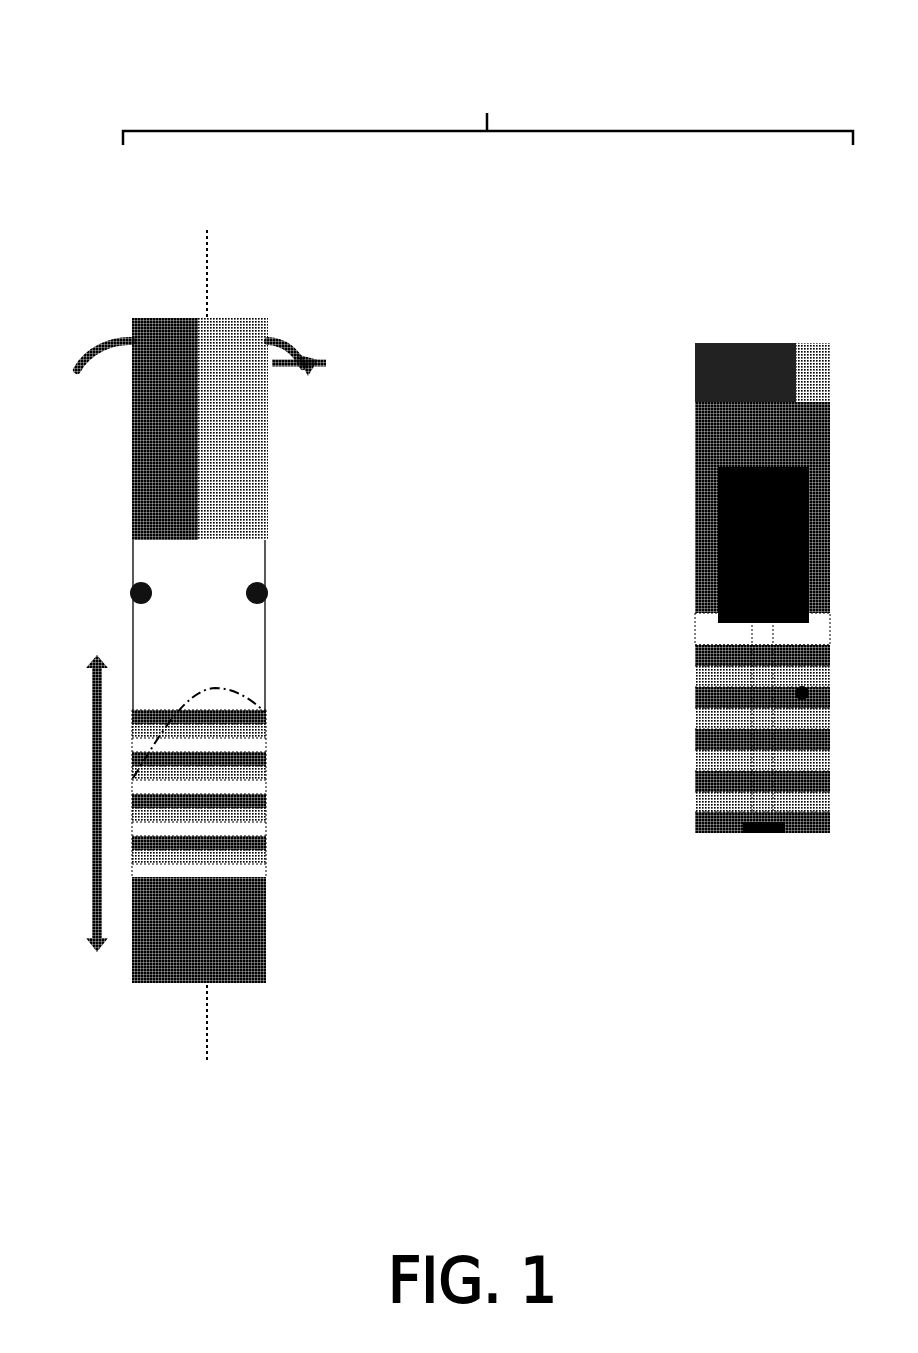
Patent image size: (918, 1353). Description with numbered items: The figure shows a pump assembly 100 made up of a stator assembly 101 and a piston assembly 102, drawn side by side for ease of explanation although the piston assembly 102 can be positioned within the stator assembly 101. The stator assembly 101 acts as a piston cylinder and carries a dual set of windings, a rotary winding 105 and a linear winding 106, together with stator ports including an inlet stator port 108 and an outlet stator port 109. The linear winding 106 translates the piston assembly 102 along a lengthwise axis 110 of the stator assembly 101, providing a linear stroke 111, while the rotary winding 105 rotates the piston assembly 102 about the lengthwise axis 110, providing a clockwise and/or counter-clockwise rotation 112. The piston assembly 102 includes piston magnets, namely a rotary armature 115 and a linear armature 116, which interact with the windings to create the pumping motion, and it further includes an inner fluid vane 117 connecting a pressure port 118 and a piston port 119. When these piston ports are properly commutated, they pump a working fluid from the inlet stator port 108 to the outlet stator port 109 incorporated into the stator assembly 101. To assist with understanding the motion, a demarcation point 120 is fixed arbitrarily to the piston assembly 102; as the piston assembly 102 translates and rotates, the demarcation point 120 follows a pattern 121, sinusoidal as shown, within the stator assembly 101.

The pump assembly 100 is at (497, 108).
The stator assembly 101 is at (263, 245).
The piston assembly 102 is at (735, 245).
The rotary winding 105 is at (236, 441).
The linear winding 106 is at (236, 851).
The inlet stator port 108 is at (128, 593).
The outlet stator port 109 is at (270, 595).
The lengthwise axis 110 is at (206, 1052).
The linear stroke 111 is at (94, 800).
The rotation 112 is at (294, 354).
The rotary armature 115 is at (693, 372).
The linear armature 116 is at (693, 740).
The inner fluid vane 117 is at (764, 630).
The pressure port 118 is at (811, 575).
The piston port 119 is at (766, 838).
The demarcation point 120 is at (808, 700).
The pattern 121 is at (218, 698).